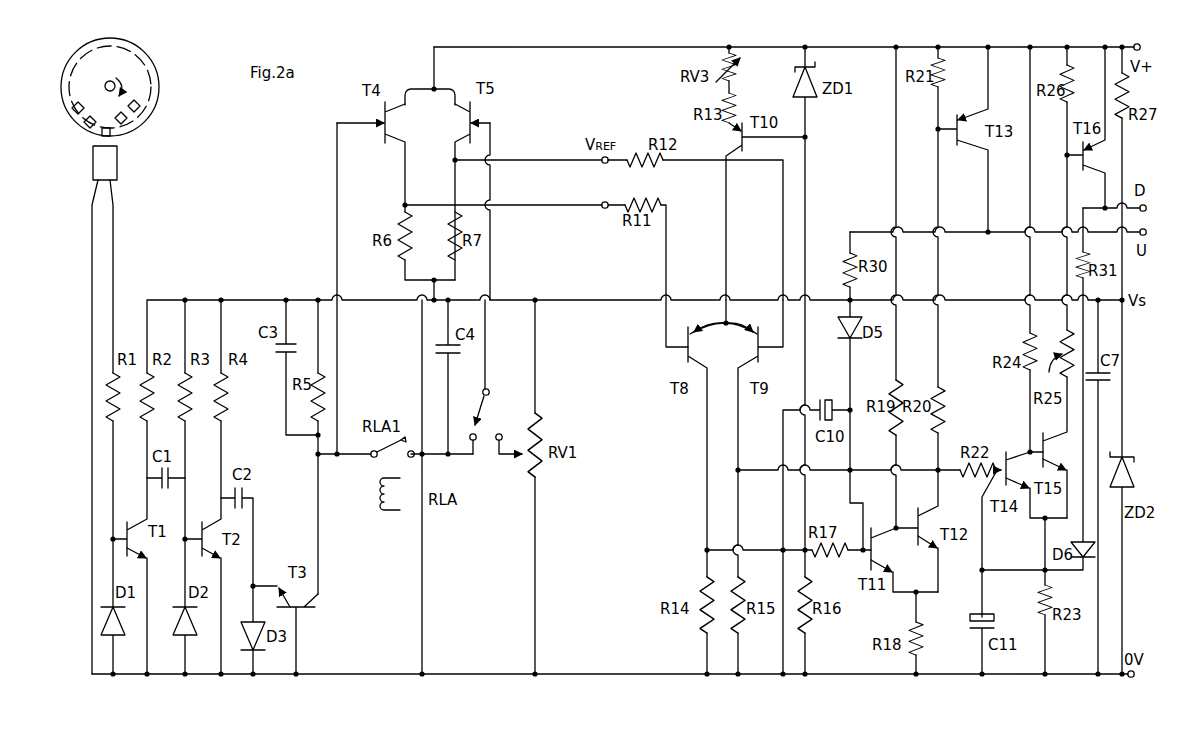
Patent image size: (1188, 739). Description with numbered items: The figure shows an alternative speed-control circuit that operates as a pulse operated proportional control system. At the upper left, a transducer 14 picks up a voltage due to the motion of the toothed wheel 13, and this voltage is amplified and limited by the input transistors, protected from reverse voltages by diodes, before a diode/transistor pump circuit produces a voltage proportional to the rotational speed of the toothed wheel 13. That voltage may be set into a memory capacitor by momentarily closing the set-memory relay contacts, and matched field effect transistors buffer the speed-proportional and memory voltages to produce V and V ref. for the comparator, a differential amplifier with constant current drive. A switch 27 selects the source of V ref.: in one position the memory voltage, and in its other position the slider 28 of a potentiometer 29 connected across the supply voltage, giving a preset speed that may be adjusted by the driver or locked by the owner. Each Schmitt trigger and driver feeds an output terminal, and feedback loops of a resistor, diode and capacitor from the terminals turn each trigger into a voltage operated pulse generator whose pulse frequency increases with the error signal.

The toothed wheel 13 is at (148, 76).
The transducer 14 is at (118, 162).
The switch 27 is at (484, 401).
The slider 28 is at (526, 459).
The potentiometer 29 is at (539, 468).